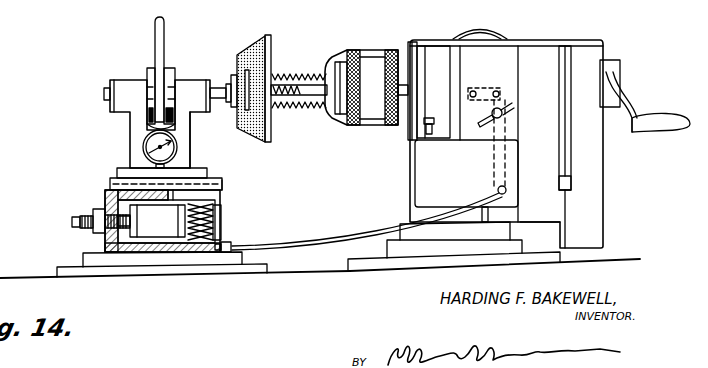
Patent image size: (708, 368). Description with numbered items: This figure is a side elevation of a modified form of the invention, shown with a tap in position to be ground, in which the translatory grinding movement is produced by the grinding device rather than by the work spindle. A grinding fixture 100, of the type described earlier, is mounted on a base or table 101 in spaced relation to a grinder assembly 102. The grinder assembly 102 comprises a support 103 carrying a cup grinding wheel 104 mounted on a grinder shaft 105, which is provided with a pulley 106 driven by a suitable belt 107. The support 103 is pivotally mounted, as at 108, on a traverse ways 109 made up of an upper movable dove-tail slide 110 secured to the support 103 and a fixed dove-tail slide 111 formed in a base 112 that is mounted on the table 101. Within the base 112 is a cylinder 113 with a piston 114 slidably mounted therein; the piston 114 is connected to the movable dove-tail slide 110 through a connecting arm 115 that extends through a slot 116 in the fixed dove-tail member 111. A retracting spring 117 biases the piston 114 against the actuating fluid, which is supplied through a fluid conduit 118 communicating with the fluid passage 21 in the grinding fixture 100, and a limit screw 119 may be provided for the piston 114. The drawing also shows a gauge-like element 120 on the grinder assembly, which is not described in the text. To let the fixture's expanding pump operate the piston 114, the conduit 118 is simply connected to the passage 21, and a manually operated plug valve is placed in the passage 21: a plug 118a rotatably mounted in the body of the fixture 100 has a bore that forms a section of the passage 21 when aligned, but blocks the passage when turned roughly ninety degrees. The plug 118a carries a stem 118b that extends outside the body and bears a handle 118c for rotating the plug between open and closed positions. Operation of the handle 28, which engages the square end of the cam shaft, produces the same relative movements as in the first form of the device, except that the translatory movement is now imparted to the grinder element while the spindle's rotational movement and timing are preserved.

The fluid communicating passage 21 is at (490, 165).
The operating handle 28 is at (655, 118).
The grinding fixture 100 is at (535, 46).
The base or table 101 is at (313, 272).
The grinder assembly 102 is at (116, 146).
The support 103 is at (125, 112).
The cup grinding wheel 104 is at (257, 150).
The grinder shaft 105 is at (216, 90).
The pulley 106 is at (166, 70).
The belt 107 is at (162, 36).
The pivotal mounting 108 is at (192, 166).
The traverse ways 109 is at (224, 185).
The upper movable dove-tail slide 110 is at (207, 173).
The fixed dove-tail slide 111 is at (220, 189).
The base 112 is at (106, 247).
The cylinder 113 is at (107, 203).
The piston 114 is at (151, 221).
The connecting arm 115 is at (119, 183).
The slot 116 is at (214, 199).
The retracting spring 117 is at (222, 227).
The fluid conduit 118 is at (345, 240).
The plug 118a is at (485, 122).
The stem 118b is at (504, 115).
The handle 118c is at (500, 98).
The limit screw 119 is at (72, 222).
The gauge 120 is at (143, 149).